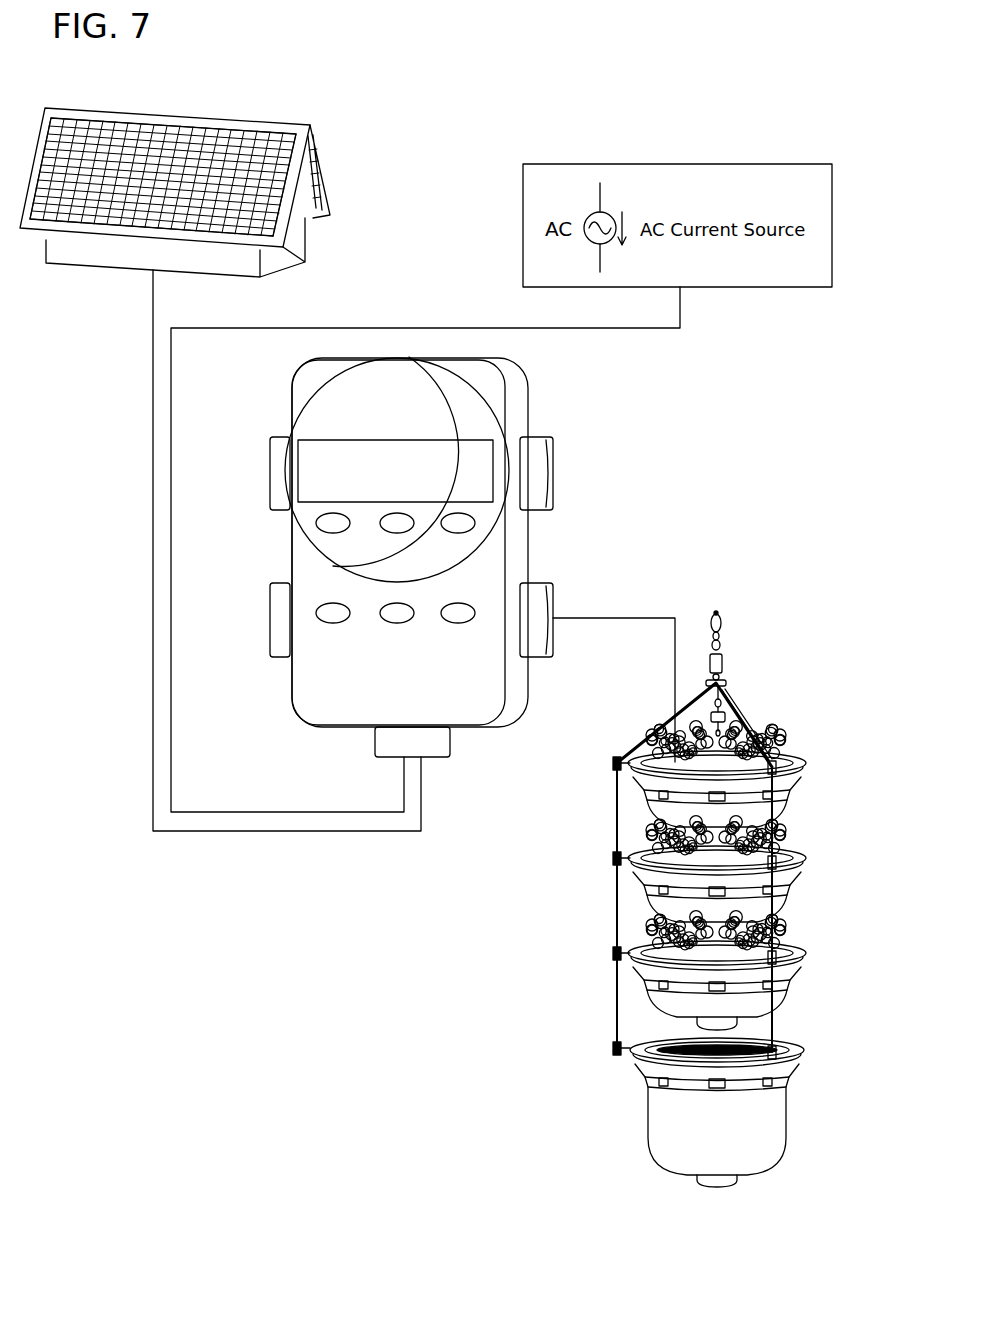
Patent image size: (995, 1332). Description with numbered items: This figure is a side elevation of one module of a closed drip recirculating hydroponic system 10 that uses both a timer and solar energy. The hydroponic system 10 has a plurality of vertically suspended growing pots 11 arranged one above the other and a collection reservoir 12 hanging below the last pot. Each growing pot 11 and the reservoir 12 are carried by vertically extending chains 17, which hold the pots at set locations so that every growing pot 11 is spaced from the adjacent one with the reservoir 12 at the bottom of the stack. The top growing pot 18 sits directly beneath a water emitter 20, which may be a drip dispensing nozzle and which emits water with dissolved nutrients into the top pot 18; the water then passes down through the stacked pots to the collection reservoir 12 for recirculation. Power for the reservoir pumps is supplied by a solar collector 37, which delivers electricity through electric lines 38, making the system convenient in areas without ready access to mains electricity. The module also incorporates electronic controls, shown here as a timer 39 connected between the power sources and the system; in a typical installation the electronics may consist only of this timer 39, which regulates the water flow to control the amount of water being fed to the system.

The hydroponic system 10 is at (708, 899).
The growing pot 11 is at (803, 994).
The collection reservoir 12 is at (636, 1126).
The chain 17 is at (616, 923).
The top growing pot 18 is at (802, 773).
The water emitter 20 is at (710, 716).
The solar collector 37 is at (332, 118).
The electric line 38 is at (291, 832).
The timer 39 is at (552, 527).